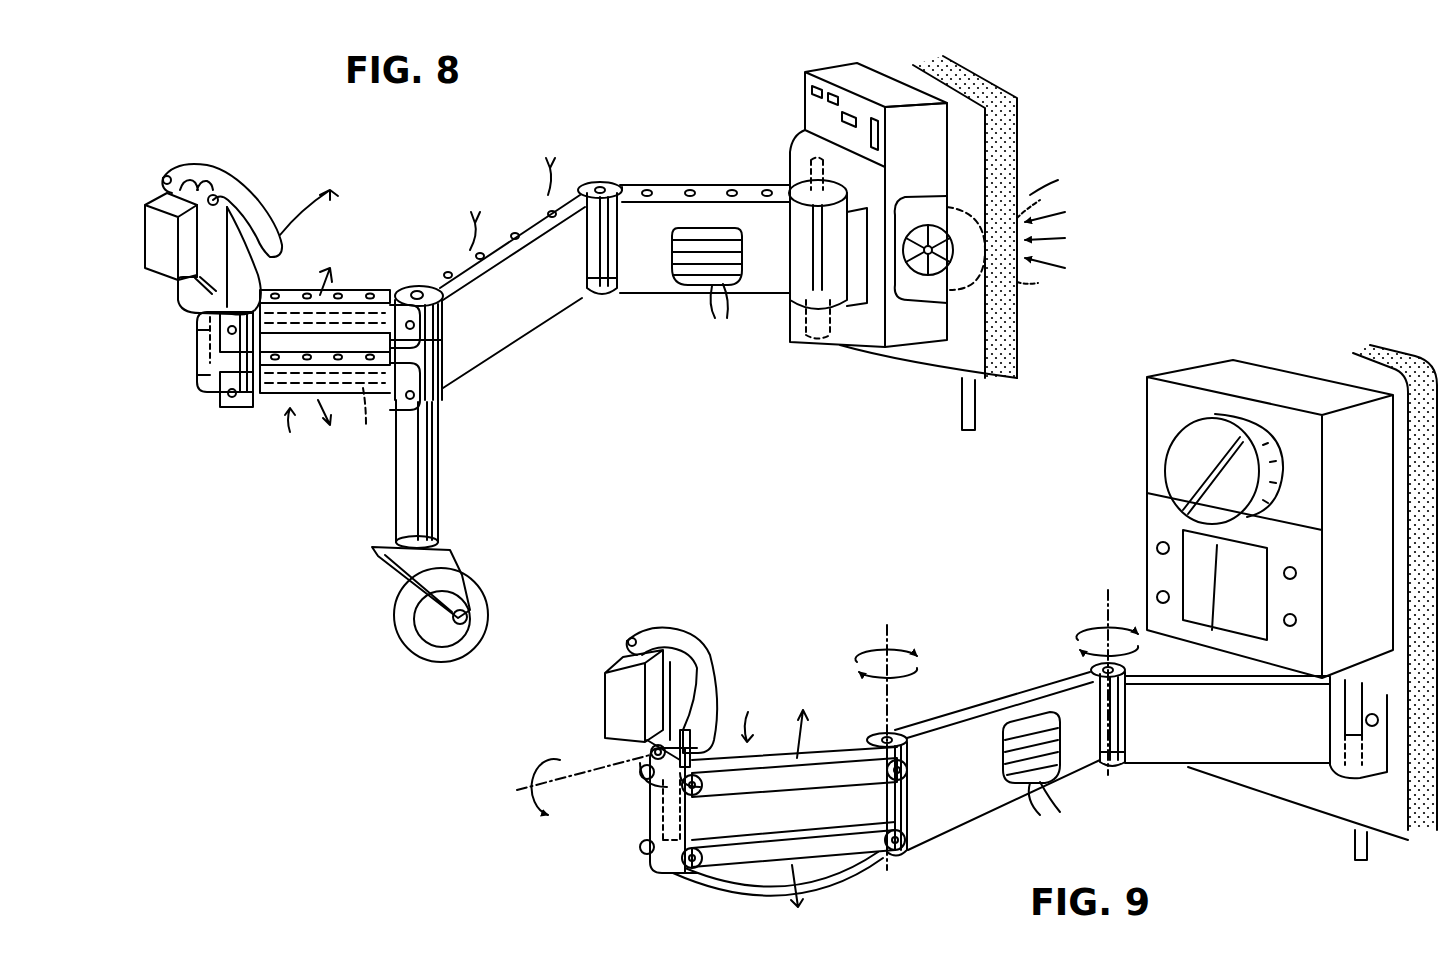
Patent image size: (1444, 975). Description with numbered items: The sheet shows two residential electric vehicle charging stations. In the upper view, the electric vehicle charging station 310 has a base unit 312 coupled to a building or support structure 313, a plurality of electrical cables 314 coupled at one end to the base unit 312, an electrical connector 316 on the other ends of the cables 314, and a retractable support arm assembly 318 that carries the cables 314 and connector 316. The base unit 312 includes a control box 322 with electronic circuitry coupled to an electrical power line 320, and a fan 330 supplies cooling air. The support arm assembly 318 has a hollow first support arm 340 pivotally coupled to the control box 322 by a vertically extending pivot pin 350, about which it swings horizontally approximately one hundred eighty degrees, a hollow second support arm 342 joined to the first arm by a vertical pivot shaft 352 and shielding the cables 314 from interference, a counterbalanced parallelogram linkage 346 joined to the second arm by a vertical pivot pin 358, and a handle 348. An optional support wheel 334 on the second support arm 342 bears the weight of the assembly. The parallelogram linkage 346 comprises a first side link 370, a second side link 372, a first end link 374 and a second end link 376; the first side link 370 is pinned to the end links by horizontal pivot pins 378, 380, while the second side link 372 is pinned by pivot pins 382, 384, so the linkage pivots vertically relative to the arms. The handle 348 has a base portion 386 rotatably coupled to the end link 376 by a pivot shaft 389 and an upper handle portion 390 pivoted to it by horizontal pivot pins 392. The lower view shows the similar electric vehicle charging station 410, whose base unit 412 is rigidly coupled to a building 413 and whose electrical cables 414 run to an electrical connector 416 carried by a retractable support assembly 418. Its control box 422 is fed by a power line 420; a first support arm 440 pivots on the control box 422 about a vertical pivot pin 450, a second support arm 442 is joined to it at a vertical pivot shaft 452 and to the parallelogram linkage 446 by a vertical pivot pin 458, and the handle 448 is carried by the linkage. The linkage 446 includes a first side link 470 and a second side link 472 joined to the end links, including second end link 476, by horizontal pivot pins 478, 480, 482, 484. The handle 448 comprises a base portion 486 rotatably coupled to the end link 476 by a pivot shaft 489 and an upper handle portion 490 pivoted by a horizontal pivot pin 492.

In FIG. 8, the electric vehicle charging station 310 is at (718, 115).
In FIG. 8, the base unit 312 is at (802, 108).
In FIG. 8, the support structure 313 is at (882, 358).
In FIG. 8, the electrical cables 314 is at (545, 343).
In FIG. 8, the electrical connector 316 is at (148, 203).
In FIG. 8, the retractable support arm assembly 318 is at (640, 160).
In FIG. 8, the electrical power line 320 is at (960, 402).
In FIG. 8, the control box 322 is at (808, 76).
In FIG. 8, the fan 330 is at (940, 205).
In FIG. 8, the support wheel 334 is at (438, 508).
In FIG. 8, the first support arm 340 is at (688, 295).
In FIG. 8, the second support arm 342 is at (570, 318).
In FIG. 8, the counterbalanced parallelogram linkage 346 is at (325, 379).
In FIG. 8, the handle 348 is at (280, 185).
In FIG. 8, the pivot pin 350 is at (825, 345).
In FIG. 8, the pivot shaft 352 is at (600, 182).
In FIG. 8, the pivot pin 358 is at (420, 288).
In FIG. 8, the first side link 370 is at (387, 288).
In FIG. 8, the second side link 372 is at (266, 400).
In FIG. 8, the first end link 374 is at (430, 352).
In FIG. 8, the second end link 376 is at (190, 385).
In FIG. 8, the horizontal pivot pin 378 is at (422, 322).
In FIG. 8, the second horizontal pivot pin 380 is at (228, 330).
In FIG. 8, the horizontally mounted pivot pin 382 is at (412, 410).
In FIG. 8, the horizontal pivot pin 384 is at (230, 400).
In FIG. 8, the base portion 386 is at (195, 312).
In FIG. 8, the pivot shaft 389 is at (208, 363).
In FIG. 8, the upper handle portion 390 is at (222, 172).
In FIG. 8, the pivot pins 392 is at (210, 195).
In FIG. 9, the electric vehicle charging station 410 is at (1028, 598).
In FIG. 9, the base unit 412 is at (1140, 472).
In FIG. 9, the support structure 413 is at (1243, 775).
In FIG. 9, the electrical cables 414 is at (880, 880).
In FIG. 9, the electrical connector 416 is at (600, 700).
In FIG. 9, the retractable support assembly 418 is at (1000, 680).
In FIG. 9, the electrical power line 420 is at (1350, 840).
In FIG. 9, the control box 422 is at (1256, 378).
In FIG. 9, the first support arm 440 is at (1165, 767).
In FIG. 9, the second support arm 442 is at (997, 764).
In FIG. 9, the parallelogram linkage 446 is at (768, 720).
In FIG. 9, the handle 448 is at (705, 645).
In FIG. 9, the pivot pin 450 is at (1340, 750).
In FIG. 9, the first joint 452 is at (1093, 665).
In FIG. 9, the pivot pin 458 is at (893, 735).
In FIG. 9, the first side link 470 is at (750, 783).
In FIG. 9, the second side link 472 is at (843, 817).
In FIG. 9, the second end link 476 is at (652, 850).
In FIG. 9, the horizontal pivot pin 478 is at (907, 770).
In FIG. 9, the second horizontal pivot pin 480 is at (682, 795).
In FIG. 9, the horizontally mounted pivot pin 482 is at (906, 848).
In FIG. 9, the horizontal pivot pin 484 is at (683, 865).
In FIG. 9, the base portion 486 is at (700, 705).
In FIG. 9, the pivot shaft 489 is at (655, 825).
In FIG. 9, the upper handle portion 490 is at (672, 632).
In FIG. 9, the pivot pin 492 is at (650, 752).